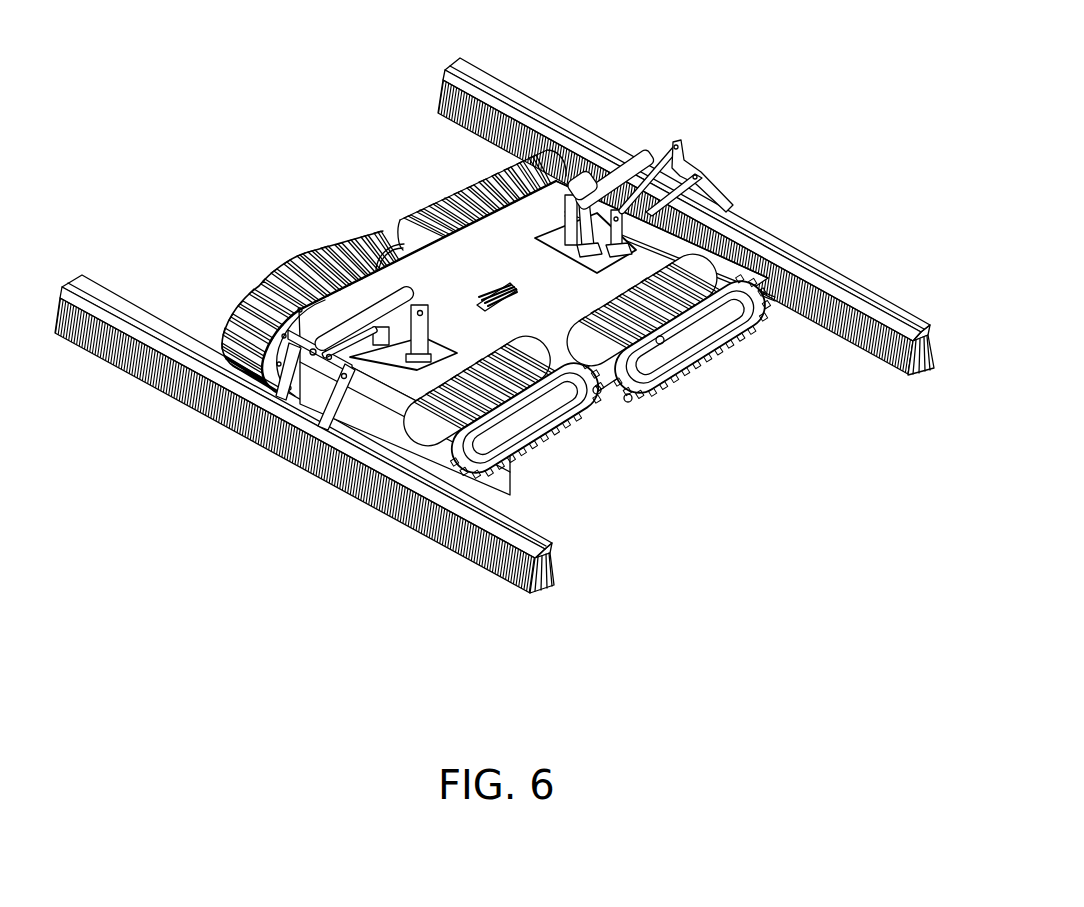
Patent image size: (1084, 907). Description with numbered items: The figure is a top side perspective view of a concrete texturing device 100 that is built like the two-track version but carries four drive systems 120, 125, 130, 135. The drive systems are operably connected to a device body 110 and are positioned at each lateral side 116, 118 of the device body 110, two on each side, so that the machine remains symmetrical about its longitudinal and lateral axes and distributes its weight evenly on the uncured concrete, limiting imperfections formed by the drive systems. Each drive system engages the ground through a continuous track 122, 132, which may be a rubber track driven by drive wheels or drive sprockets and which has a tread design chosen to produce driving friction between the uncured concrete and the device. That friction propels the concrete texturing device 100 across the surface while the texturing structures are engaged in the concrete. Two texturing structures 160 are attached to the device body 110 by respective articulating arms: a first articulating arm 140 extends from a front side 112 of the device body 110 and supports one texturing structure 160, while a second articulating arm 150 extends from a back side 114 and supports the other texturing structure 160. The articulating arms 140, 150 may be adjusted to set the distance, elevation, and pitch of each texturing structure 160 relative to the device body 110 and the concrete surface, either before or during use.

The concrete texturing device 100 is at (240, 55).
The device body 110 is at (566, 386).
The front side 112 is at (672, 256).
The back side 114 is at (403, 420).
The lateral side 116 is at (376, 273).
The lateral side 118 is at (515, 400).
The drive system 120 is at (762, 300).
The track 122 is at (660, 344).
The drive system 125 is at (597, 394).
The drive system 130 is at (560, 163).
The track 132 is at (447, 180).
The drive system 135 is at (248, 340).
The first articulating arm 140 is at (686, 164).
The second articulating arm 150 is at (312, 395).
The texturing structure 160 is at (862, 290).